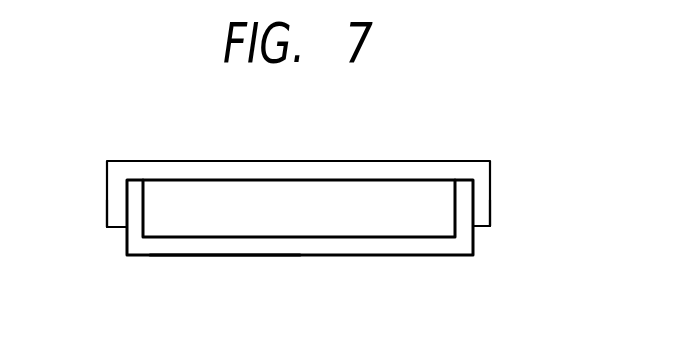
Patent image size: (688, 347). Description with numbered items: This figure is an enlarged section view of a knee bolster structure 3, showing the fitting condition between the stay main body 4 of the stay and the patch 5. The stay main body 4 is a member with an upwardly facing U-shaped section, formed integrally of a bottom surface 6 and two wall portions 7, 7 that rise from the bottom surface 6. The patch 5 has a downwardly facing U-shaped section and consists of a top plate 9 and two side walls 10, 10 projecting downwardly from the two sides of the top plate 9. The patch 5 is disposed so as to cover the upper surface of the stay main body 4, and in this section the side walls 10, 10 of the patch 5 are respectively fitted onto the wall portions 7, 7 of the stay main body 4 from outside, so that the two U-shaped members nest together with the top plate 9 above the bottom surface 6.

The display panel assembly 3 is at (298, 196).
The stay main body 4 is at (220, 243).
The patch 5 is at (200, 170).
The bottom surface 6 is at (310, 242).
The wall portions 7 is at (137, 230).
The top plate 9 is at (318, 173).
The side walls 10 is at (480, 197).